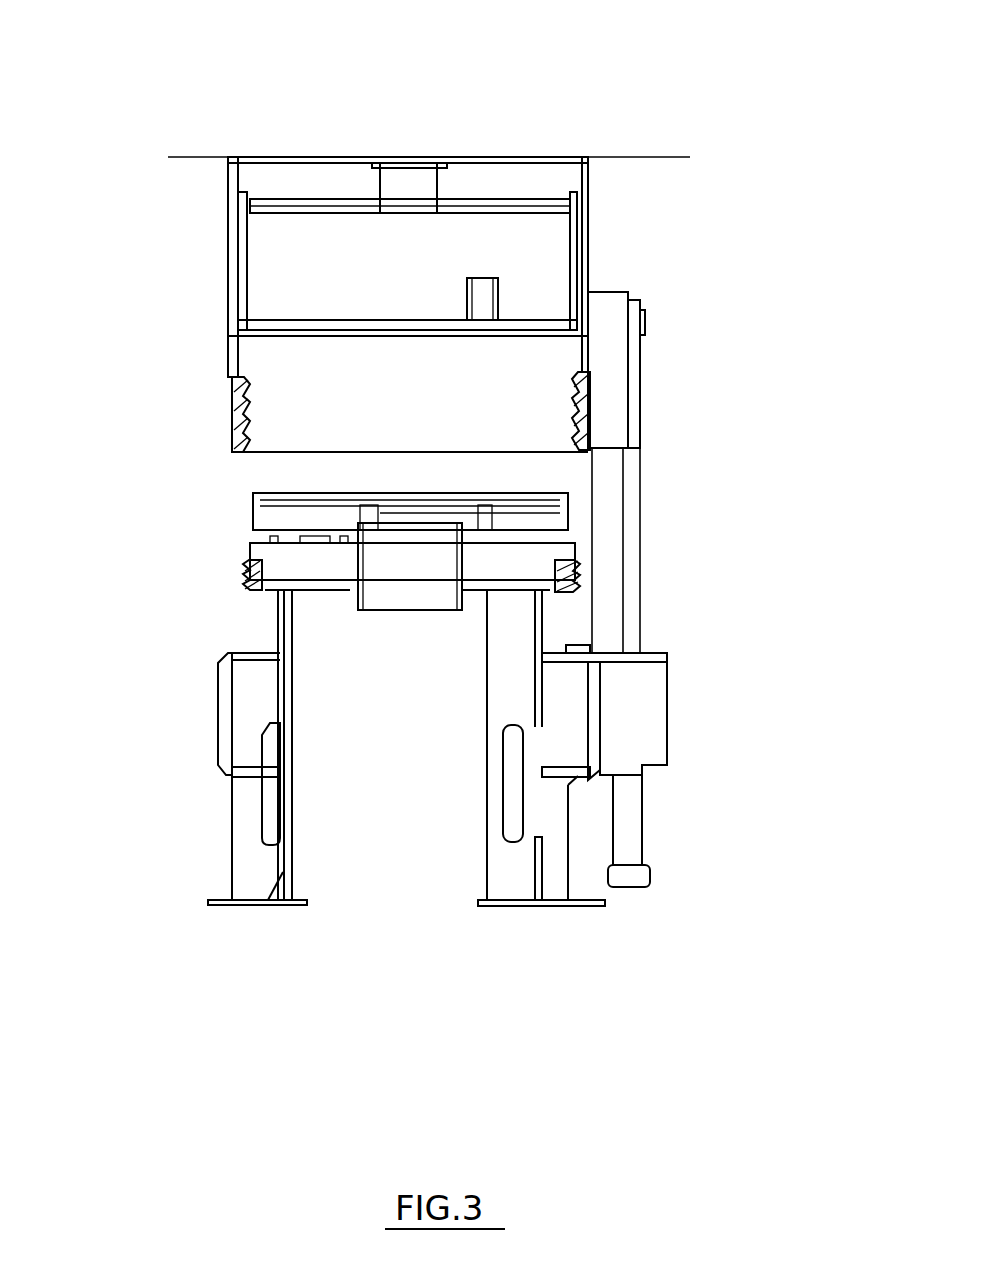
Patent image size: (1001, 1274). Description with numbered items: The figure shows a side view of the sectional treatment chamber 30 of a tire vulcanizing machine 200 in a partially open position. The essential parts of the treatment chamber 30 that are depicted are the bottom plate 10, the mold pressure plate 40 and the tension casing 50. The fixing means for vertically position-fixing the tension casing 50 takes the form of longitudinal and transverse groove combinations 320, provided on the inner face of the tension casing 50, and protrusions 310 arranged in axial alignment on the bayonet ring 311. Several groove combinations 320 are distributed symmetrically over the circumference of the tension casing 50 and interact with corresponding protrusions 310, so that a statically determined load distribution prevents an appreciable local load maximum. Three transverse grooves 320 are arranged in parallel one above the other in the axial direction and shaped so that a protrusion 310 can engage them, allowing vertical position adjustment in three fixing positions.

The tire vulcanizing machine 200 is at (182, 135).
The treatment chamber 30 is at (540, 260).
The longitudinal and transverse groove combination 320 is at (232, 372).
The tension casing 50 is at (590, 305).
The mold pressure plate 40 is at (540, 518).
The bottom plate 10 is at (285, 563).
The bayonet ring 311 is at (243, 572).
The protrusion 310 is at (580, 575).